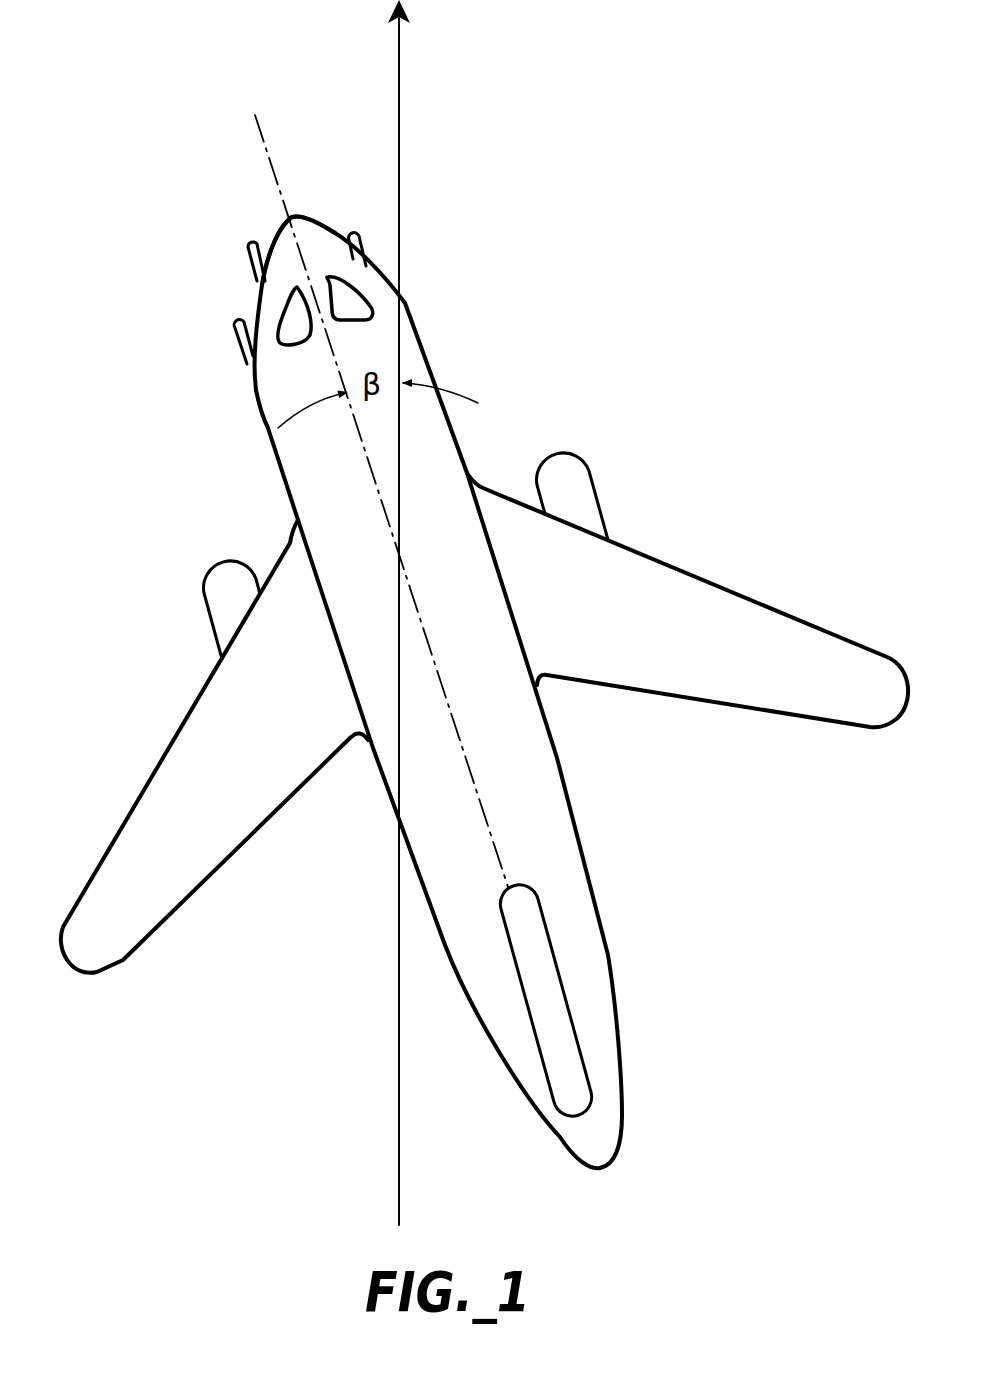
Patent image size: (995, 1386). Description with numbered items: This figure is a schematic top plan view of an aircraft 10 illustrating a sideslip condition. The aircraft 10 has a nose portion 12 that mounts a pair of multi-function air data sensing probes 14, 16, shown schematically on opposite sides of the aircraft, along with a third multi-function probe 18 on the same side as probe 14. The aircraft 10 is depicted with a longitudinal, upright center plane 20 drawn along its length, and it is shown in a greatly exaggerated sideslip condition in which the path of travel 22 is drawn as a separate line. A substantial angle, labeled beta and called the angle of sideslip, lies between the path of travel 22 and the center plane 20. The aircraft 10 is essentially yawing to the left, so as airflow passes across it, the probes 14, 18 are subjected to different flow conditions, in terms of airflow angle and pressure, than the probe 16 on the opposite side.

The aircraft 10 is at (613, 931).
The nose portion 12 is at (288, 217).
The multi-function air data sensing probe 14 is at (250, 252).
The multi-function air data sensing probe 16 is at (357, 247).
The third multi-function probe 18 is at (238, 343).
The longitudinal upright center plane 20 is at (480, 798).
The path of travel 22 is at (399, 160).